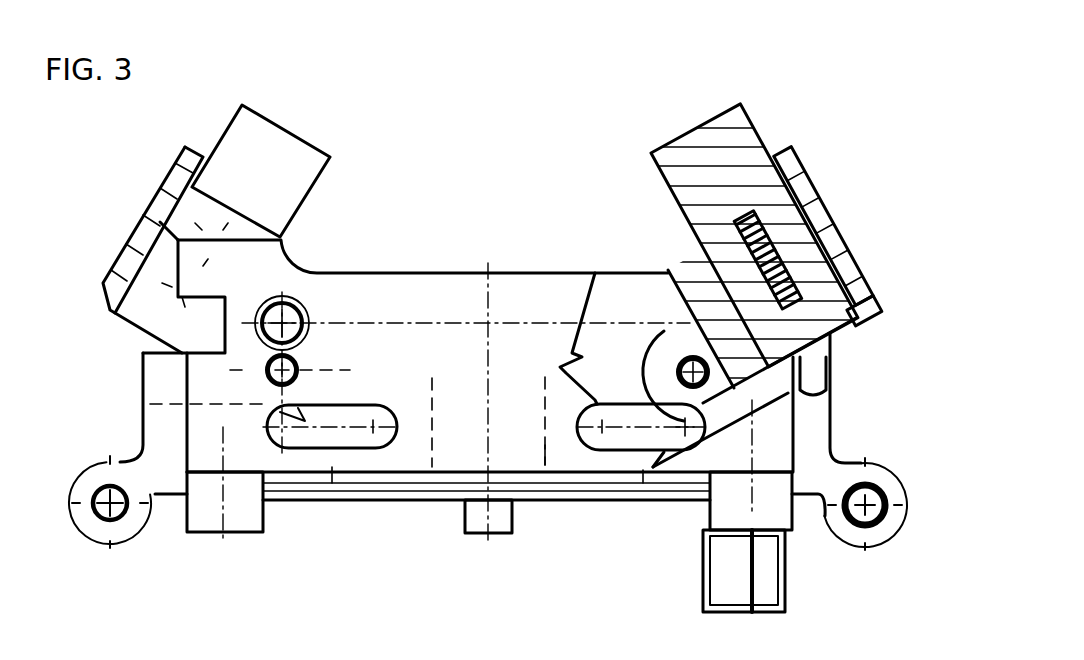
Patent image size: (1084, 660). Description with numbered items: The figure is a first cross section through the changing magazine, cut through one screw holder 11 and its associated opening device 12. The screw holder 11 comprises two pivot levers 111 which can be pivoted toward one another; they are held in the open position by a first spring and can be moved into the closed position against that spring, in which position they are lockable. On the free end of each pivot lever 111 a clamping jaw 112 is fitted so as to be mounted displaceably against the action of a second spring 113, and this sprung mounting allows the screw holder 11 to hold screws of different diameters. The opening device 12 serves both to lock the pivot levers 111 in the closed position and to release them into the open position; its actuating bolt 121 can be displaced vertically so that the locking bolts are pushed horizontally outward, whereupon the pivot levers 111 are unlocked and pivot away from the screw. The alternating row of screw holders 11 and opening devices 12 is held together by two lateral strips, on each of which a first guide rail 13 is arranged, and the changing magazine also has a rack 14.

The screw holder 11 is at (905, 178).
The pivot lever 111 is at (150, 235).
The clamping jaw 112 is at (280, 142).
The second spring 113 is at (870, 287).
The opening device 12 is at (400, 287).
The actuating bolt 121 is at (498, 518).
The first guide rail 13 is at (123, 537).
The rack 14 is at (770, 596).